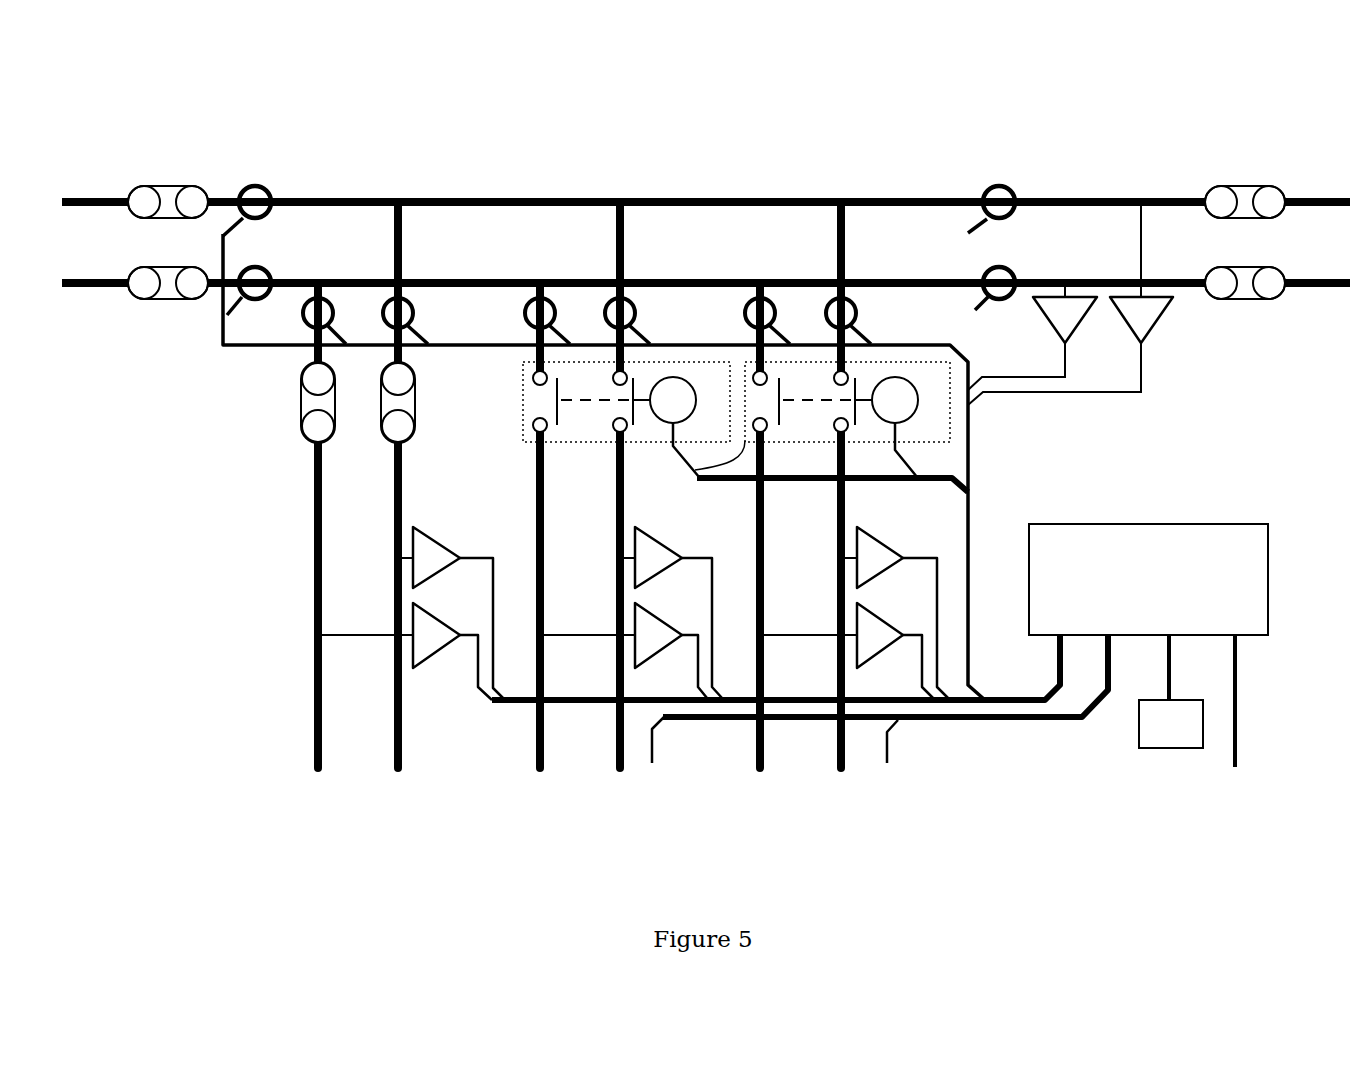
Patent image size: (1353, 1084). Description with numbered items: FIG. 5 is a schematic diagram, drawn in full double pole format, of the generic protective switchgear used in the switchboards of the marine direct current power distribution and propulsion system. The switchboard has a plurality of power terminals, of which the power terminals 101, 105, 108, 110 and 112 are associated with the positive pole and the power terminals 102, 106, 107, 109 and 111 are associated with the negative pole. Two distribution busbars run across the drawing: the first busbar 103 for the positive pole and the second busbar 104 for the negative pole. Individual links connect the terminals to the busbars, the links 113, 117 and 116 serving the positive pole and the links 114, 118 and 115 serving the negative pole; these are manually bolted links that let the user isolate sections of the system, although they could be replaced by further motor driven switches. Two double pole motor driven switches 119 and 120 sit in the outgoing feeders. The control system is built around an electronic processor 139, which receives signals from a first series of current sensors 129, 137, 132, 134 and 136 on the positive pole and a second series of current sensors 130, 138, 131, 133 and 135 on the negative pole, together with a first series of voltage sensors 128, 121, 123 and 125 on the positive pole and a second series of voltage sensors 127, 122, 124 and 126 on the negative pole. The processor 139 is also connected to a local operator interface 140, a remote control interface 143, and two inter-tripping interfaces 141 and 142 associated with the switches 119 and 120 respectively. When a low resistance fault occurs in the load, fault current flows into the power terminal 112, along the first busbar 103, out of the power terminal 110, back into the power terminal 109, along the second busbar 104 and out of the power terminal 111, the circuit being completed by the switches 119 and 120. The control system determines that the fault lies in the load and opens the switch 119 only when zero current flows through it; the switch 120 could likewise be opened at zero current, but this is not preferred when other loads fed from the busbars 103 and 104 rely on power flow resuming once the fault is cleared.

The power terminal 101 is at (83, 196).
The power terminal 102 is at (84, 287).
The first busbar 103 is at (478, 196).
The second busbar 104 is at (573, 278).
The power terminal 105 is at (1313, 196).
The power terminal 106 is at (1318, 290).
The power terminal 107 is at (320, 770).
The power terminal 108 is at (400, 770).
The power terminal 109 is at (542, 770).
The power terminal 110 is at (622, 770).
The power terminal 111 is at (762, 770).
The power terminal 112 is at (843, 770).
The link 113 is at (163, 186).
The link 114 is at (178, 300).
The link 115 is at (300, 418).
The link 116 is at (380, 428).
The link 117 is at (1238, 186).
The link 118 is at (1250, 300).
The double pole motor driven switch 119 is at (523, 395).
The double pole motor driven switch 120 is at (688, 479).
The voltage sensor 121 is at (428, 532).
The voltage sensor 122 is at (428, 657).
The voltage sensor 123 is at (667, 538).
The voltage sensor 124 is at (662, 648).
The voltage sensor 125 is at (880, 542).
The voltage sensor 126 is at (880, 653).
The voltage sensor 127 is at (1080, 330).
The voltage sensor 128 is at (1160, 330).
The current sensor 129 is at (263, 186).
The current sensor 130 is at (270, 265).
The current sensor 131 is at (323, 298).
The current sensor 132 is at (412, 298).
The current sensor 133 is at (525, 305).
The current sensor 134 is at (640, 303).
The current sensor 135 is at (757, 303).
The current sensor 136 is at (858, 303).
The current sensor 137 is at (985, 188).
The current sensor 138 is at (1013, 266).
The electronic processor 139 is at (1268, 590).
The local operator interface 140 is at (1175, 748).
The inter-tripping interface 141 is at (654, 753).
The inter-tripping interface 142 is at (888, 760).
The remote control interface 143 is at (1235, 733).